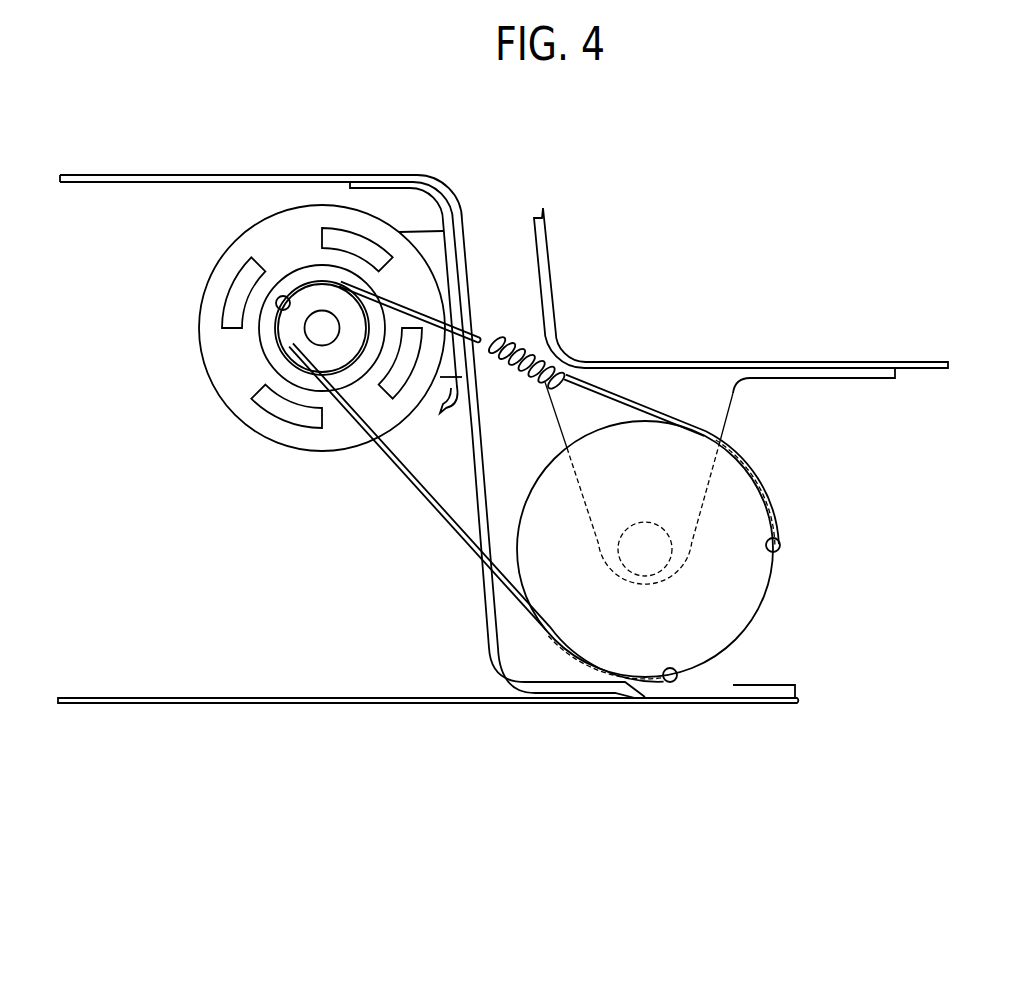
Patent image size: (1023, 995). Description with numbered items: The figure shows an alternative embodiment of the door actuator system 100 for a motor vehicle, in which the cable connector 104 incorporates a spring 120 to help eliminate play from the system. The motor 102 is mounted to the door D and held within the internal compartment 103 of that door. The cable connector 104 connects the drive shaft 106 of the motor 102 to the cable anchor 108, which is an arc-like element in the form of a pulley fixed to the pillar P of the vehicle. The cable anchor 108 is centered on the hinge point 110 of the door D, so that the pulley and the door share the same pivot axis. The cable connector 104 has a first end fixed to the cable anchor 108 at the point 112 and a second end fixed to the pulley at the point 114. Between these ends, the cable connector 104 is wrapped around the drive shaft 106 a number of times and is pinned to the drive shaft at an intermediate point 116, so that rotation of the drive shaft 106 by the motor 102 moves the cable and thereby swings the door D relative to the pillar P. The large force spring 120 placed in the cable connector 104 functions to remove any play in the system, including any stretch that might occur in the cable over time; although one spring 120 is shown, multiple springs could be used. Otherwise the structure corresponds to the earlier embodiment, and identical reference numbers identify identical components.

The door actuator system 100 is at (803, 207).
The motor 102 is at (257, 228).
The internal compartment 103 is at (167, 263).
The cable connector 104 is at (432, 508).
The drive shaft 106 is at (308, 338).
The cable anchor 108 is at (637, 657).
The hinge point 110 is at (667, 535).
The point 112 is at (781, 547).
The point 114 is at (673, 682).
The intermediate point 116 is at (276, 303).
The spring 120 is at (532, 355).
The pillar P is at (703, 400).
The door D is at (142, 705).